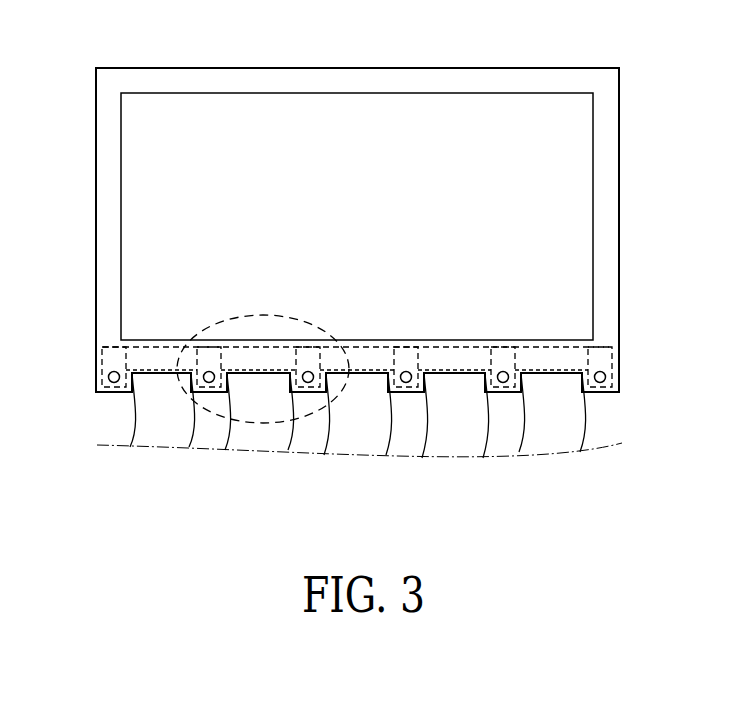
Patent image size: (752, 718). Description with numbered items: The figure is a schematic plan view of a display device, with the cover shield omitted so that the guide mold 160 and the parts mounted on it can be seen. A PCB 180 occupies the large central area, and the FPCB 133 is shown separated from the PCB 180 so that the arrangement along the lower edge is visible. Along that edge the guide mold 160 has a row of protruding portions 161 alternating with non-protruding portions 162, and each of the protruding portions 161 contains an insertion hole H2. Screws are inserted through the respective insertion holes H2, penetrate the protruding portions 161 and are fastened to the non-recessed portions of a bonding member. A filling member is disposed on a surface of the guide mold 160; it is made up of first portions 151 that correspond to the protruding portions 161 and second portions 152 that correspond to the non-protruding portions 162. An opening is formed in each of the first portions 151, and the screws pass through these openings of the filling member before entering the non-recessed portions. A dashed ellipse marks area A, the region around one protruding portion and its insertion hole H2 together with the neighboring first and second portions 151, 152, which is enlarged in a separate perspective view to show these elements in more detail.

The guide mold 160 is at (253, 83).
The PCB 180 is at (197, 113).
The second portions 152 is at (258, 348).
The FPCB 133 is at (333, 440).
The first portions 151 is at (315, 390).
The insertion hole H2 is at (313, 375).
The protruding portions 161 is at (215, 422).
The non-protruding portions 162 is at (236, 421).
The area A is at (248, 423).